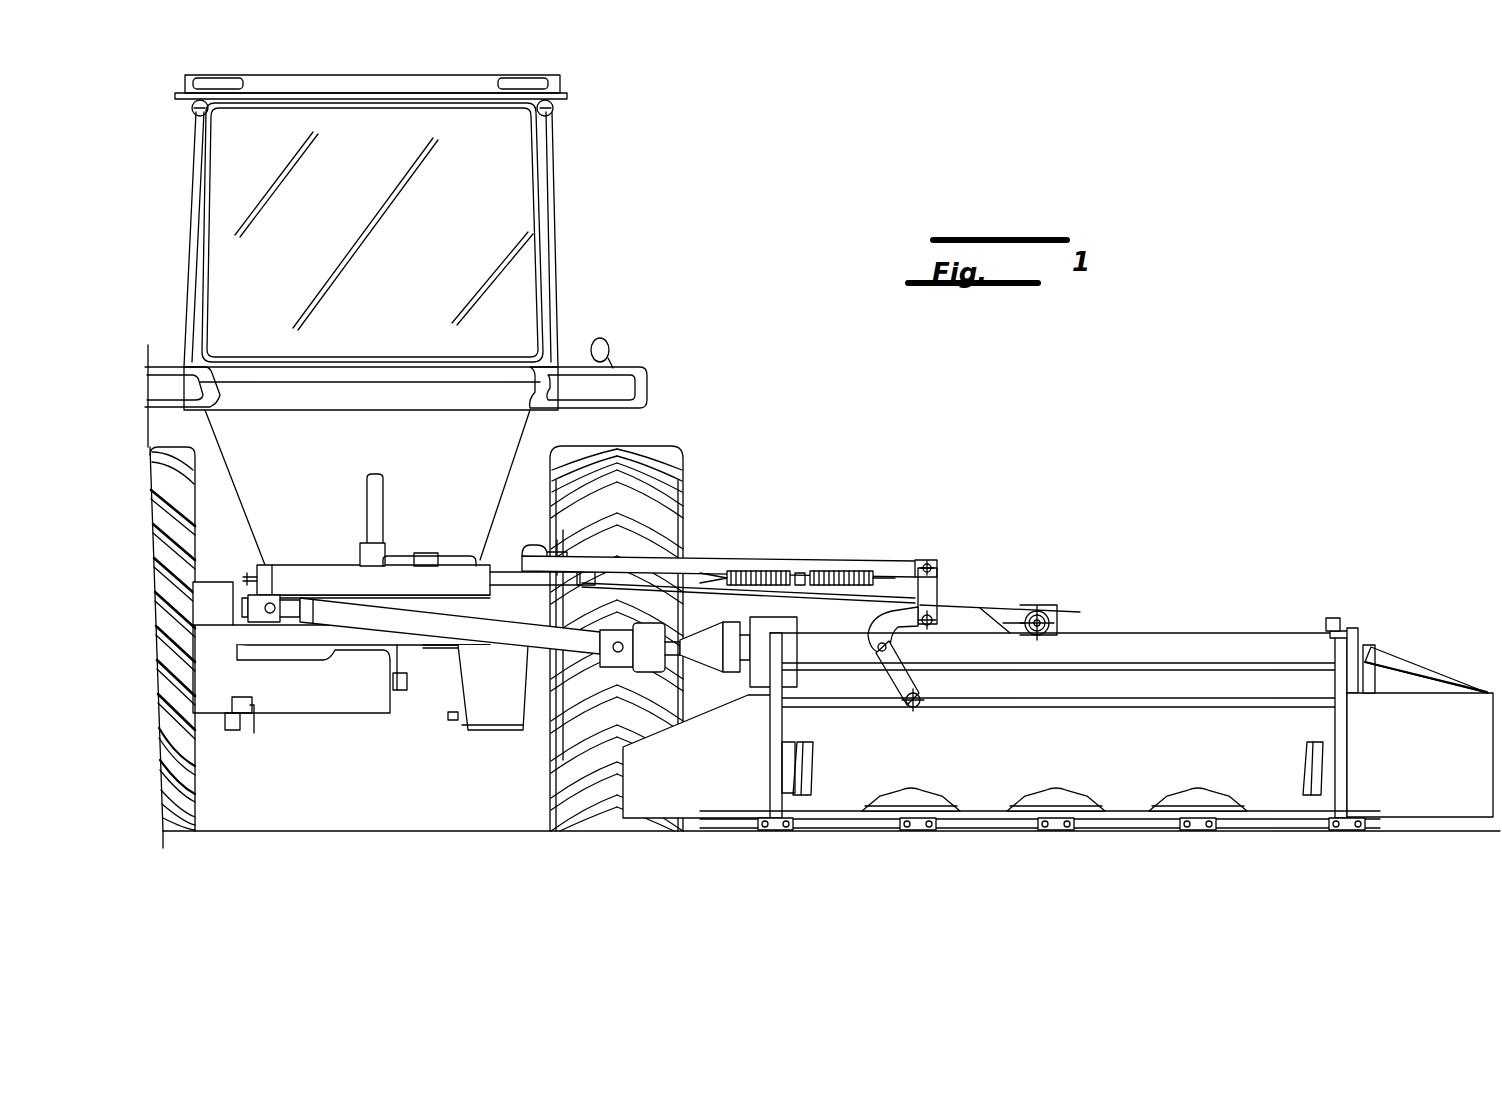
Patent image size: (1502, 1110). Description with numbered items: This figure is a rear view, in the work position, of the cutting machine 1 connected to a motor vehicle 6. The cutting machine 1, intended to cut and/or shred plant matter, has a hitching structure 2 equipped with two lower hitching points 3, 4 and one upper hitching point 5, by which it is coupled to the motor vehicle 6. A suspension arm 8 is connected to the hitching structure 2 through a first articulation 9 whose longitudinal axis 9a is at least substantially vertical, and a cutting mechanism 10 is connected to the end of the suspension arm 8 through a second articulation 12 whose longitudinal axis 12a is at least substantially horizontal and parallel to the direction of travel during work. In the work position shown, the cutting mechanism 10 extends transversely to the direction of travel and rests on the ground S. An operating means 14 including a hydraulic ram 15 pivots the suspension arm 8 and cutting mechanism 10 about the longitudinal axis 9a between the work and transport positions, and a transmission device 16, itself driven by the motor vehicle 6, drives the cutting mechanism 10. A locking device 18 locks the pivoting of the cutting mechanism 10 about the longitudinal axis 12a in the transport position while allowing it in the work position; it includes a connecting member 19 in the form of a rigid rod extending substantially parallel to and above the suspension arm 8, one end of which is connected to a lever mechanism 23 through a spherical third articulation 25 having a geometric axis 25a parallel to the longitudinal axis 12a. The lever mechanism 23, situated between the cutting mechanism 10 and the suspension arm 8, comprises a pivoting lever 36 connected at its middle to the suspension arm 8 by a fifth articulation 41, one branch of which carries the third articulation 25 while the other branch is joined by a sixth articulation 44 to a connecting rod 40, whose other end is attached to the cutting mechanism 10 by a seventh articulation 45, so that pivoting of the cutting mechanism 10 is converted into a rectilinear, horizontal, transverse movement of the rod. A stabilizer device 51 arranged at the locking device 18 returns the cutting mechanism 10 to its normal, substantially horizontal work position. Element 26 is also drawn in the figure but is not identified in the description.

The cutting machine 1 is at (1355, 624).
The hitching structure 2 is at (288, 648).
The lower hitching point 3 is at (231, 735).
The lower hitching point 4 is at (499, 728).
The upper hitching point 5 is at (383, 542).
The motor vehicle 6 is at (563, 262).
The suspension arm 8 is at (696, 616).
The first articulation 9 is at (569, 606).
The longitudinal axis 9a is at (547, 742).
The cutting mechanism 10 is at (956, 834).
The second articulation 12 is at (1046, 609).
The longitudinal axis 12a is at (1057, 608).
The operating means 14 is at (335, 562).
The hydraulic ram 15 is at (300, 565).
The transmission device 16 is at (296, 714).
The locking device 18 is at (847, 556).
The connecting member 19 is at (815, 556).
The lever mechanism 23 is at (943, 587).
The third articulation 25 is at (932, 562).
The geometric axis 25a is at (937, 558).
The clamp bracket 26 is at (546, 549).
The pivoting lever 36 is at (890, 622).
The connecting rod 40 is at (896, 684).
The fifth articulation 41 is at (883, 643).
The sixth articulation 44 is at (875, 649).
The seventh articulation 45 is at (909, 708).
The stabilizer device 51 is at (764, 566).
The ground S is at (373, 831).